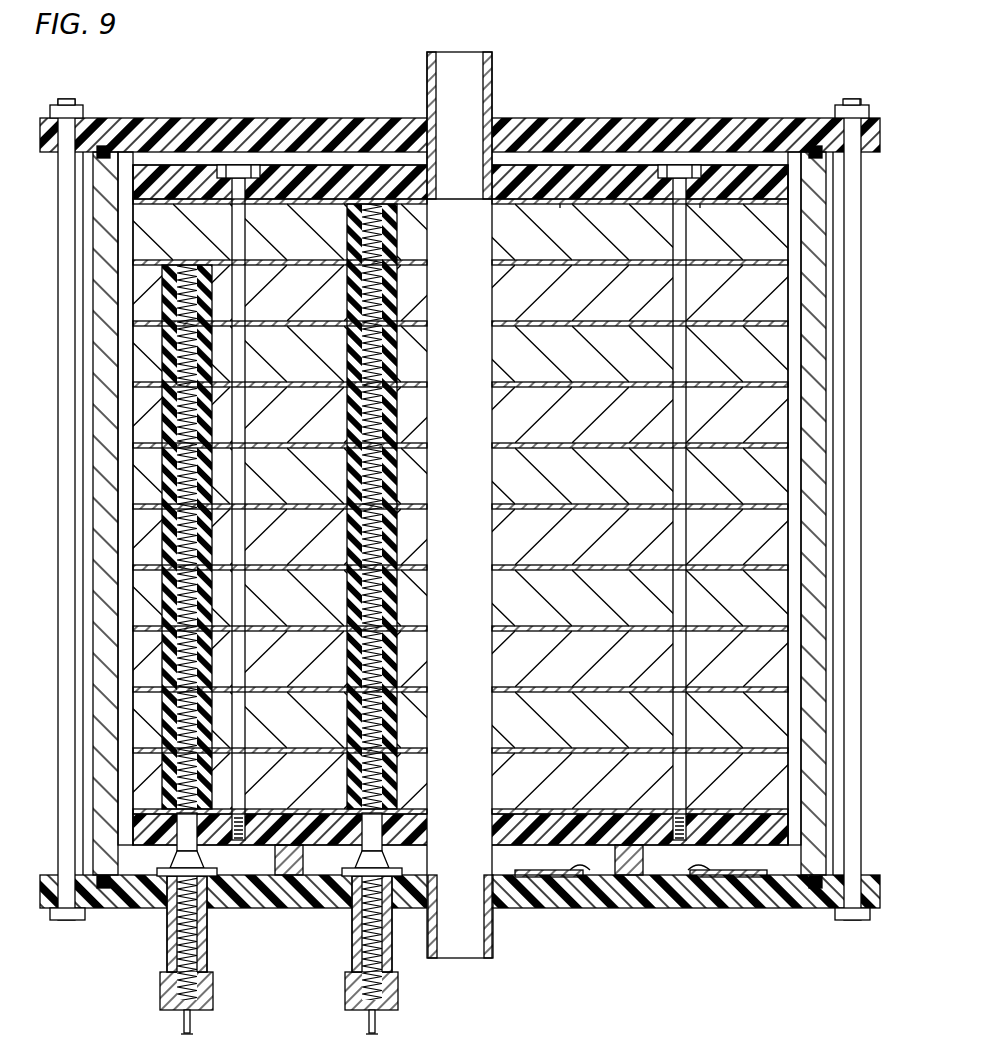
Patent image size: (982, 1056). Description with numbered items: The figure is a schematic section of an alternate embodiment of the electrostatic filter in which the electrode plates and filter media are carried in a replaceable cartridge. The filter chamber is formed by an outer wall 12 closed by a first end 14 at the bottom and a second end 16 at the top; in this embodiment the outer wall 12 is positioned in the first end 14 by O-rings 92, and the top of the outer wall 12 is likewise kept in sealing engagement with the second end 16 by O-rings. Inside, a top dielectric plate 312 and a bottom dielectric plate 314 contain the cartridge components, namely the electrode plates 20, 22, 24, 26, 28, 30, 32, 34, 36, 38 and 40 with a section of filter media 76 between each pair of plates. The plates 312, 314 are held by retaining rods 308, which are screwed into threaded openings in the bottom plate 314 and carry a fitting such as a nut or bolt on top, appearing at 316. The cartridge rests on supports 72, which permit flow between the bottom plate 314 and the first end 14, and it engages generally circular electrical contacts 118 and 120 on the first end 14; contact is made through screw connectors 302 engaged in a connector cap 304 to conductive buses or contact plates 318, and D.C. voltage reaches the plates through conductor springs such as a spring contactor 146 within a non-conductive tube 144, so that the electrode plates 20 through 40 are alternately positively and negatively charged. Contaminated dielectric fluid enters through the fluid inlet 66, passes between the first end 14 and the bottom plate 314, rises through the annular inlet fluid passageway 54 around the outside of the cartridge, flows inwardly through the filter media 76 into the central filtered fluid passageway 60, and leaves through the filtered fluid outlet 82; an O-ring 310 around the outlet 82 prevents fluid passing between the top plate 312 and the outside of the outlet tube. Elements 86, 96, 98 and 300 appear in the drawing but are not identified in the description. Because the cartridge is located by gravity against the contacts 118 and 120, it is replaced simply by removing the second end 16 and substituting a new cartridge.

The outer wall 12 is at (858, 742).
The first end 14 is at (768, 908).
The second end 16 is at (125, 128).
The electrode plate 20 is at (519, 809).
The electrode plate 22 is at (519, 748).
The electrode plate 24 is at (519, 687).
The electrode plate 26 is at (519, 626).
The electrode plate 28 is at (519, 565).
The electrode plate 30 is at (519, 504).
The electrode plate 32 is at (519, 443).
The electrode plate 34 is at (519, 382).
The electrode plate 36 is at (519, 321).
The electrode plate 38 is at (519, 260).
The electrode plate 40 is at (588, 206).
The inlet fluid passageway 54 is at (806, 545).
The filtered fluid passageway 60 is at (470, 830).
The fluid inlet 66 is at (485, 940).
The supports 72 is at (290, 855).
The filter media sections 76 is at (718, 244).
The filtered fluid outlet 82 is at (438, 68).
The upper seal 86 is at (812, 148).
The O-rings 92 is at (105, 890).
The sleeve 96 is at (856, 300).
The tie bolt 98 is at (62, 105).
The electrical contact 118 is at (682, 872).
The electrical contact 120 is at (583, 870).
The non-conductive tube 144 is at (200, 545).
The spring contactor 146 is at (195, 601).
The valve assembly 300 is at (392, 953).
The screw connectors 302 is at (184, 1022).
The connector cap 304 is at (162, 985).
The retaining rods 308 is at (242, 486).
The O-ring 310 is at (518, 204).
The top dielectric plate 312 is at (372, 180).
The bottom dielectric plate 314 is at (660, 848).
The nut 316 is at (238, 165).
The contact plates 318 is at (336, 872).